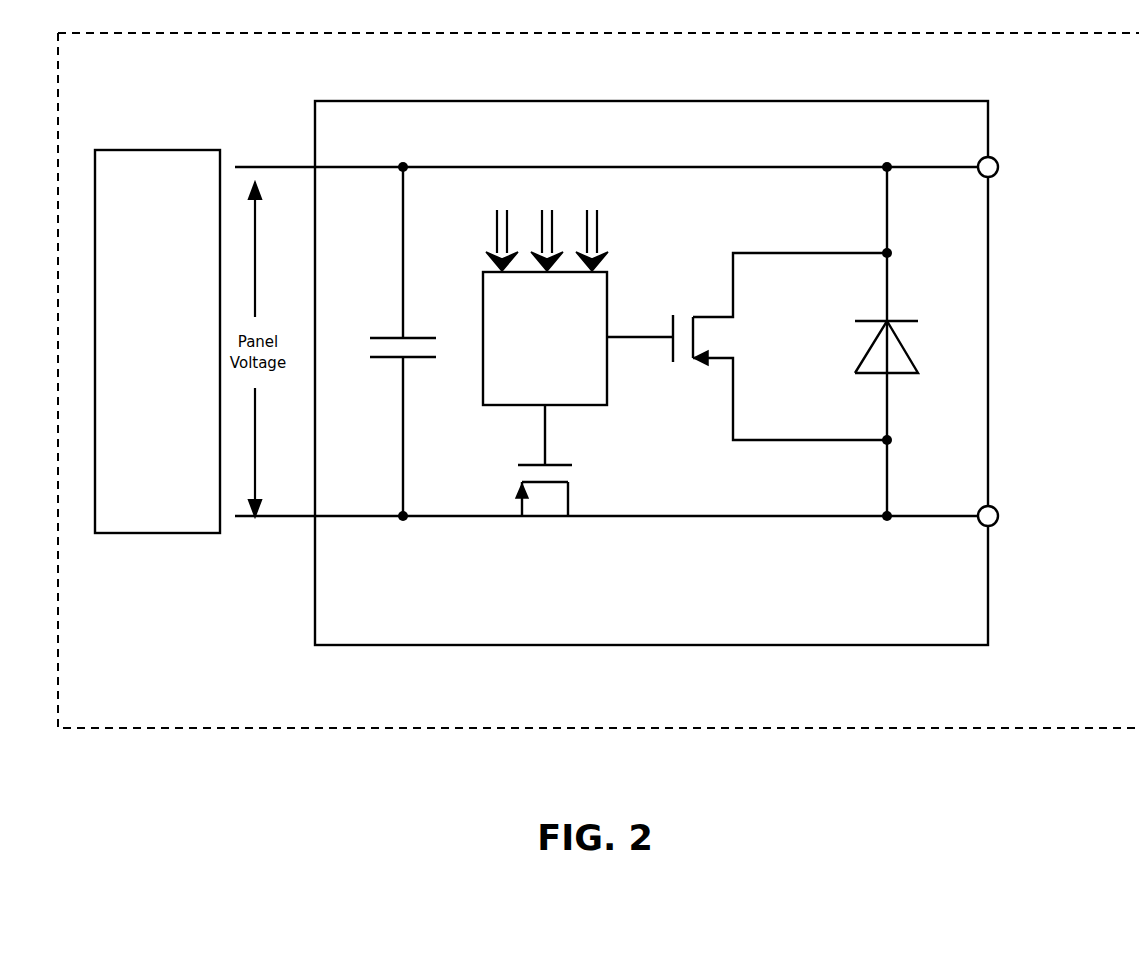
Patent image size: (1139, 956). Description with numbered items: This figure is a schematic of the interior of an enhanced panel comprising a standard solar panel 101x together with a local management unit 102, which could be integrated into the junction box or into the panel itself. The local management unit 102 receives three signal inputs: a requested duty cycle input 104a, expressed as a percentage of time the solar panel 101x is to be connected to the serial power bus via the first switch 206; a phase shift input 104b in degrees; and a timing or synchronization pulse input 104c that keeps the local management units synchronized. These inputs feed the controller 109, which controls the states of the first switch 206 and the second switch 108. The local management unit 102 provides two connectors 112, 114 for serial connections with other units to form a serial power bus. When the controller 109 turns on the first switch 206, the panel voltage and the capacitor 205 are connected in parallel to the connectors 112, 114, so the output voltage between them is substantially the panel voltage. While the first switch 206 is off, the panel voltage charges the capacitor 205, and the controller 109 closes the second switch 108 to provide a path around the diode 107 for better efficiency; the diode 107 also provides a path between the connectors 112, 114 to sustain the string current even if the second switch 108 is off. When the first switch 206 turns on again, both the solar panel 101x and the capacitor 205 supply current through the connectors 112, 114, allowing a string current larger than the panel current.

The solar panel 101x is at (157, 341).
The local management unit (LMU) 102 is at (651, 373).
The requested duty cycle input 104a is at (502, 230).
The phase shift input 104b is at (546, 230).
The timing or synchronization pulse input 104c is at (592, 230).
The diode D1 107 is at (906, 320).
The switch Q2 108 is at (673, 344).
The controller 109 is at (545, 338).
The connector 112 is at (995, 176).
The connector 114 is at (995, 507).
The capacitor C1 205 is at (385, 359).
The switch Q1 206 is at (532, 464).